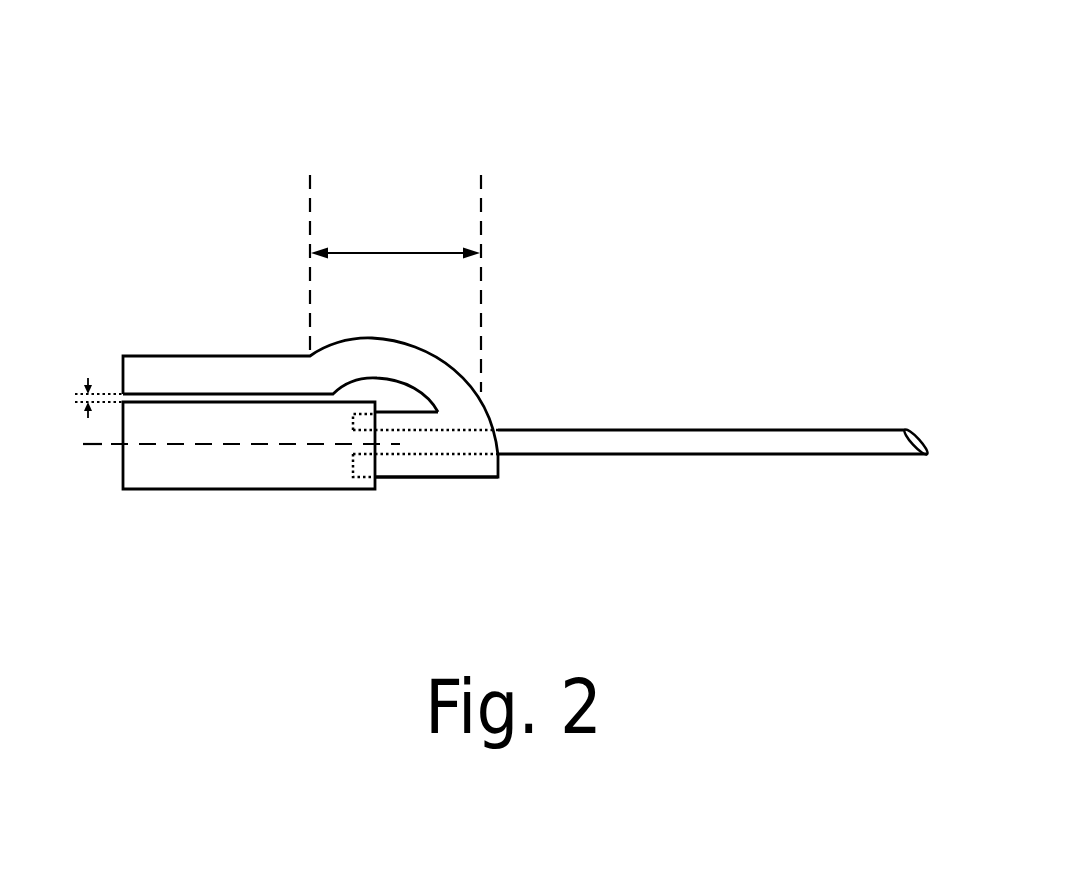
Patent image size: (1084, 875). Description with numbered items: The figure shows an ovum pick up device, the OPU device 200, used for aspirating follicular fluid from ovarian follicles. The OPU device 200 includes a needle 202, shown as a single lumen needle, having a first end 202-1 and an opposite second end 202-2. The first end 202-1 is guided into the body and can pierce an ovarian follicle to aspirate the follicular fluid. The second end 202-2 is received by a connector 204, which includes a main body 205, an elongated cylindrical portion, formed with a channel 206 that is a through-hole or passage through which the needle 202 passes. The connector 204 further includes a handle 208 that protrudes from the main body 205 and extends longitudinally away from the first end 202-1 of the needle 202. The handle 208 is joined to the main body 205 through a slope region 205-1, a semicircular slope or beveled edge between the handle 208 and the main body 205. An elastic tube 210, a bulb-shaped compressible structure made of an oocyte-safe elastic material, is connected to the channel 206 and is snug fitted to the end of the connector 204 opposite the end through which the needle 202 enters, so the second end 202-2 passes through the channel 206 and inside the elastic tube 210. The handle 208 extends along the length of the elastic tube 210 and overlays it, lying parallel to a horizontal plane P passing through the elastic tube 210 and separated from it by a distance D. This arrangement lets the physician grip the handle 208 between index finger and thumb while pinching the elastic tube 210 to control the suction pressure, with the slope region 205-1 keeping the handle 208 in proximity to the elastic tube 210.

The OPU device 200 is at (507, 312).
The needle 202 is at (624, 441).
The first end 202-1 is at (920, 428).
The second end 202-2 is at (355, 453).
The connector 204 is at (463, 499).
The main body 205 is at (413, 468).
The slope region 205-1 is at (385, 252).
The channel 206 is at (440, 430).
The handle 208 is at (205, 356).
The elastic tube 210 is at (178, 491).
The distance D is at (90, 398).
The horizontal plane P is at (85, 444).